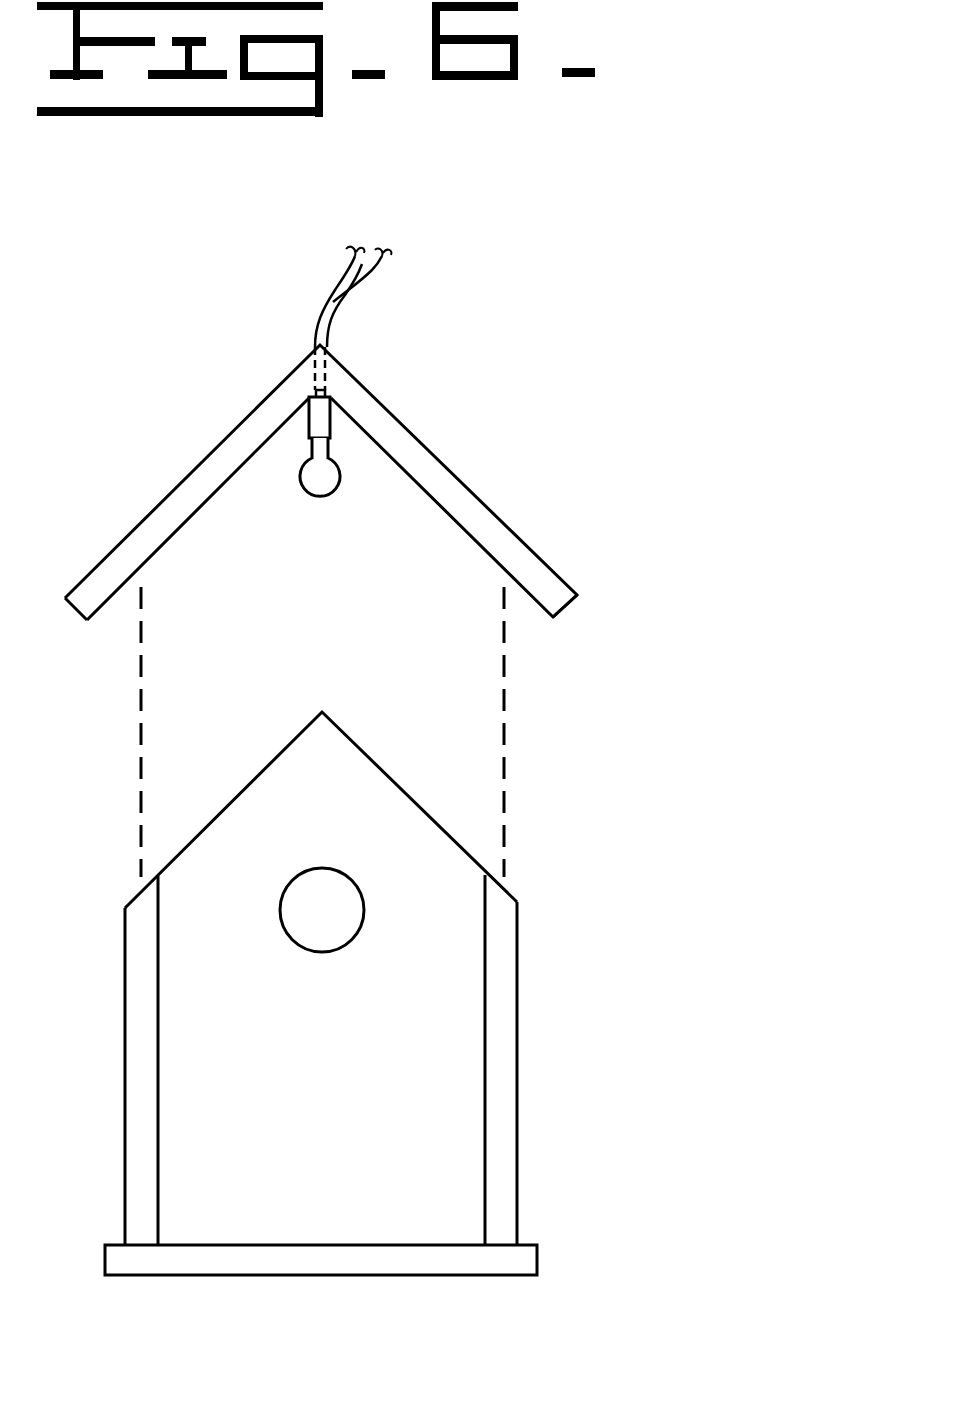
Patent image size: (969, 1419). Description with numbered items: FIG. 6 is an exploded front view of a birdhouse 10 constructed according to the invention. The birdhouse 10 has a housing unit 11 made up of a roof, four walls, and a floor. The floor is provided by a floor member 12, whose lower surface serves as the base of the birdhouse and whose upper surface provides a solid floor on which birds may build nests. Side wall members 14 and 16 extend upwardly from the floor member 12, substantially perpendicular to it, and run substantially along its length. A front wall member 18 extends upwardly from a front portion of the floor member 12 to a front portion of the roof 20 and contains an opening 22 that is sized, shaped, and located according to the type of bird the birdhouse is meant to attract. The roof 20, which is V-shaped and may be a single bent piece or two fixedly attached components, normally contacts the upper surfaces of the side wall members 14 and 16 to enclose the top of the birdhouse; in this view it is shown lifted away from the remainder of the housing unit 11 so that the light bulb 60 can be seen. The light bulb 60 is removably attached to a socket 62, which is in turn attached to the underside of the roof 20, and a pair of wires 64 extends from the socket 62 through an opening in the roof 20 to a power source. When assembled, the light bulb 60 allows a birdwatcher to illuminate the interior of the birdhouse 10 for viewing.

The birdhouse 10 is at (662, 708).
The housing unit 11 is at (577, 942).
The floor member 12 is at (537, 1257).
The side wall member 14 is at (517, 1147).
The side wall member 16 is at (127, 1065).
The front wall member 18 is at (447, 1043).
The roof 20 is at (521, 538).
The opening 22 is at (322, 907).
The light bulb 60 is at (330, 477).
The socket 62 is at (318, 412).
The pair of wires 64 is at (327, 300).